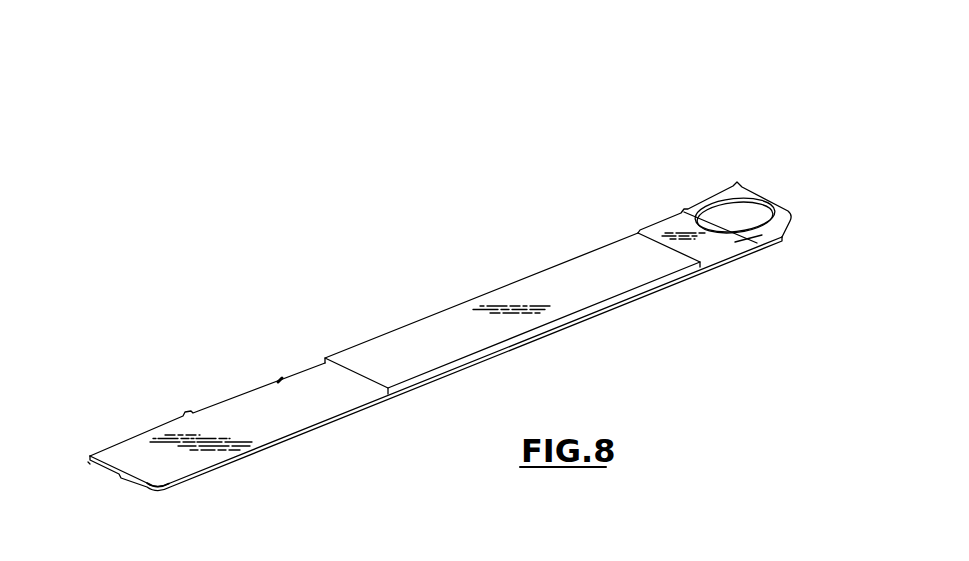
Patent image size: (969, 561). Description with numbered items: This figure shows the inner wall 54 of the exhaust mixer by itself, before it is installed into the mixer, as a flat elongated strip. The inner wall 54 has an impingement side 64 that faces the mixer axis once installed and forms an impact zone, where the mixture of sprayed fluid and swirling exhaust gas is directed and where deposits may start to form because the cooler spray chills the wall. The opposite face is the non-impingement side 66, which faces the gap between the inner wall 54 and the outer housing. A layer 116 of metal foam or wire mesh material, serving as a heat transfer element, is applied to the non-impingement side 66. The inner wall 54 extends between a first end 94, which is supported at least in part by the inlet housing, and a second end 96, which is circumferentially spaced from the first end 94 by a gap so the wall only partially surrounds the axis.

The inner wall 54 is at (662, 232).
The impingement side 64 is at (322, 423).
The non-impingement side 66 is at (208, 425).
The first end 94 is at (770, 231).
The second end 96 is at (151, 473).
The layer 116 is at (468, 315).